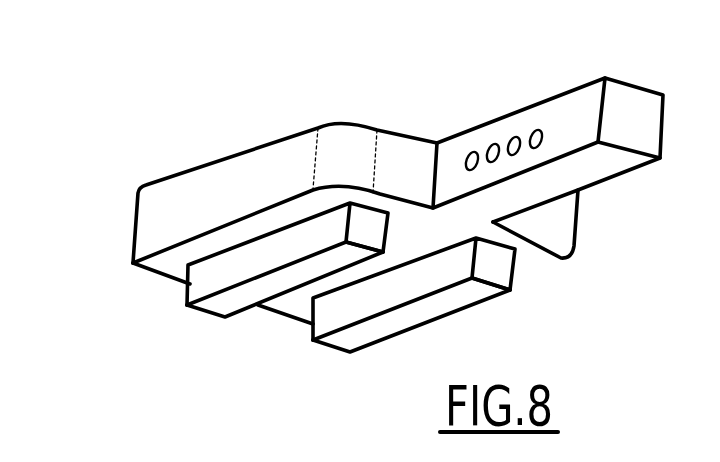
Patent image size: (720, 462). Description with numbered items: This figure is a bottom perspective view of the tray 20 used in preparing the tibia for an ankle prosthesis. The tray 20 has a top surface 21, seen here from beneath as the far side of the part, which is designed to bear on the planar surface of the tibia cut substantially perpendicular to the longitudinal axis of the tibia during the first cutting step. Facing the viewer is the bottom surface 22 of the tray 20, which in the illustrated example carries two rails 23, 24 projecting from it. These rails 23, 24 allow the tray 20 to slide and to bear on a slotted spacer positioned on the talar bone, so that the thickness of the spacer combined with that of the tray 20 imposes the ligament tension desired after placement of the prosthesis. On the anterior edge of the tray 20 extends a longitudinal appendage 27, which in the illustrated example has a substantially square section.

The tray 20 is at (116, 228).
The top surface 21 is at (237, 157).
The bottom surface 22 is at (173, 268).
The rail 23 is at (217, 305).
The rail 24 is at (347, 340).
The longitudinal appendage 27 is at (630, 117).